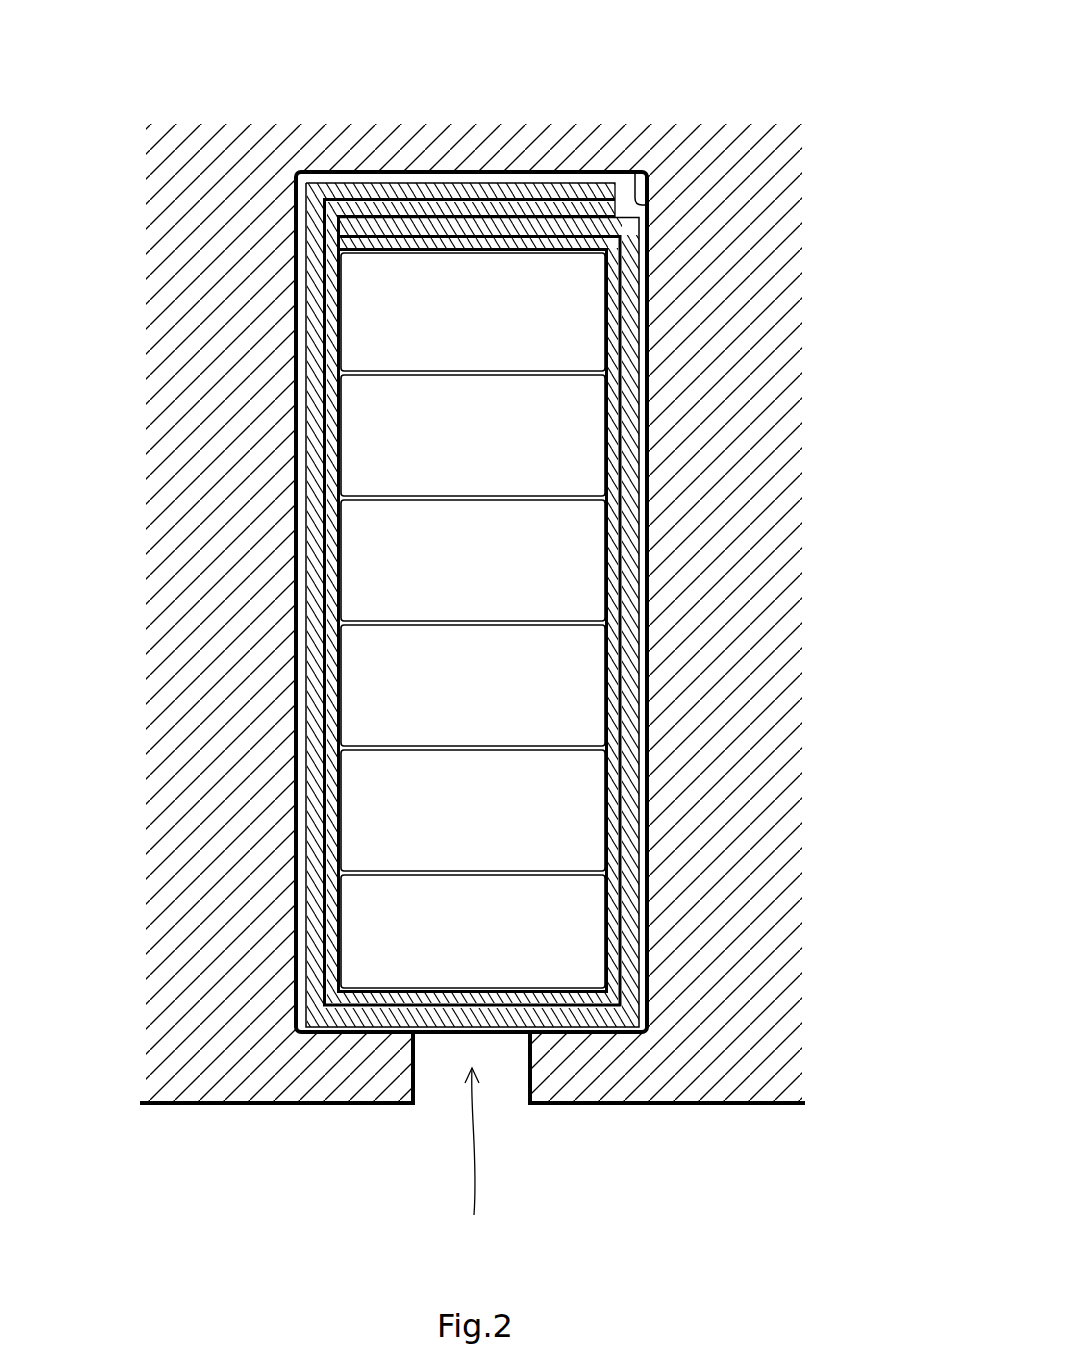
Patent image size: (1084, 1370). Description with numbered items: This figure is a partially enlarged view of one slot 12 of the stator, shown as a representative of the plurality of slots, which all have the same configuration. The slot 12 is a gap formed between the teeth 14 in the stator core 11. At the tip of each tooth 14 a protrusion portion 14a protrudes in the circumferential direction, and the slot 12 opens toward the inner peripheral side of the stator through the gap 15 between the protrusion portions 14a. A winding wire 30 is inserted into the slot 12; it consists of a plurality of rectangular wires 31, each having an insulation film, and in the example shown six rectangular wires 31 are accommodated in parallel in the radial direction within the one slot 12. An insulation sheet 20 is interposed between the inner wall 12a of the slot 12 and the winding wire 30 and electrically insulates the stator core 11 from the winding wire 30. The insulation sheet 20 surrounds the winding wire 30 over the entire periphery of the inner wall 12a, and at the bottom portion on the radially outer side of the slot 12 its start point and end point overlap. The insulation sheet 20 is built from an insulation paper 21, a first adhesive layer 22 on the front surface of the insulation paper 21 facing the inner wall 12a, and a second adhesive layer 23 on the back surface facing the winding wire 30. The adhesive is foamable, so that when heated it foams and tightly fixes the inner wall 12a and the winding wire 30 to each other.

The stator core 11 is at (754, 148).
The slot 12 is at (475, 170).
The inner wall 12a is at (650, 168).
The tooth 14 is at (218, 1040).
The protrusion portion 14a is at (365, 1082).
The gap 15 is at (475, 1160).
The insulation sheet 20 is at (633, 605).
The insulation paper 21 is at (623, 298).
The first adhesive layer 22 is at (633, 350).
The second adhesive layer 23 is at (620, 242).
The winding wire 30 is at (464, 620).
The rectangular wire 31 is at (590, 413).